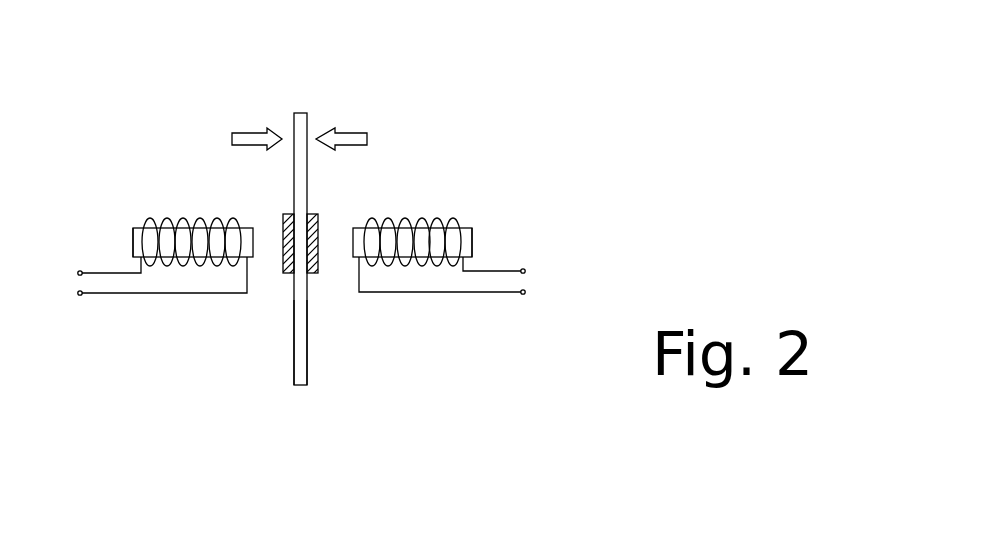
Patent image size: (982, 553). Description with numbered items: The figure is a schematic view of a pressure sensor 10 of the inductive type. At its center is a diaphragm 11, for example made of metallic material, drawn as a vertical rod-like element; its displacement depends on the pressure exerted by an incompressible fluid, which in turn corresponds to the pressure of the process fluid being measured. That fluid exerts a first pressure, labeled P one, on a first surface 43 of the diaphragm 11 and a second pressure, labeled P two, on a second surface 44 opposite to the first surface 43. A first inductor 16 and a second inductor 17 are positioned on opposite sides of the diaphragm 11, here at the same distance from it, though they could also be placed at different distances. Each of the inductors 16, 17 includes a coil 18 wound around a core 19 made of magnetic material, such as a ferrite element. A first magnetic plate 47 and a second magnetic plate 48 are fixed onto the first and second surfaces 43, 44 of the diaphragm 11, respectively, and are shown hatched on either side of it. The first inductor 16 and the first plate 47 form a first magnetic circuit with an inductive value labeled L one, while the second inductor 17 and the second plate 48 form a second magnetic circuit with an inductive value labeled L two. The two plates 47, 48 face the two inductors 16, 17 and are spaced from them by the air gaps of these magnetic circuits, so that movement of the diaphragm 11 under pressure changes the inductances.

The pressure sensor 10 is at (529, 100).
The diaphragm 11 is at (299, 382).
The first inductor 16 is at (163, 208).
The second inductor 17 is at (437, 208).
The coil 18 is at (146, 221).
The core 19 is at (131, 240).
The first surface 43 is at (292, 353).
The second surface 44 is at (310, 340).
The first magnetic plate 47 is at (281, 230).
The second magnetic plate 48 is at (321, 230).